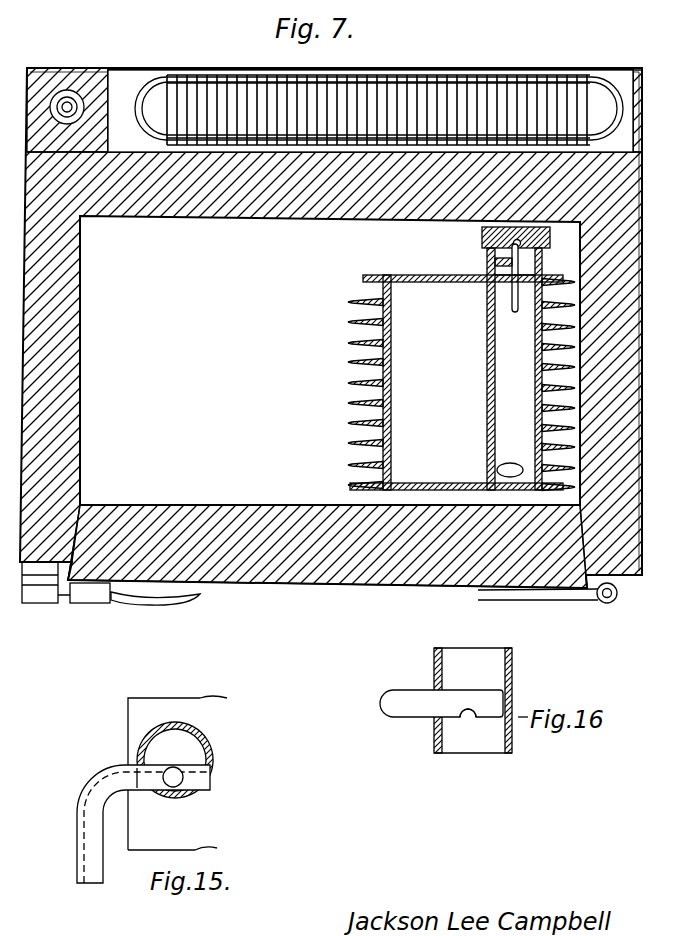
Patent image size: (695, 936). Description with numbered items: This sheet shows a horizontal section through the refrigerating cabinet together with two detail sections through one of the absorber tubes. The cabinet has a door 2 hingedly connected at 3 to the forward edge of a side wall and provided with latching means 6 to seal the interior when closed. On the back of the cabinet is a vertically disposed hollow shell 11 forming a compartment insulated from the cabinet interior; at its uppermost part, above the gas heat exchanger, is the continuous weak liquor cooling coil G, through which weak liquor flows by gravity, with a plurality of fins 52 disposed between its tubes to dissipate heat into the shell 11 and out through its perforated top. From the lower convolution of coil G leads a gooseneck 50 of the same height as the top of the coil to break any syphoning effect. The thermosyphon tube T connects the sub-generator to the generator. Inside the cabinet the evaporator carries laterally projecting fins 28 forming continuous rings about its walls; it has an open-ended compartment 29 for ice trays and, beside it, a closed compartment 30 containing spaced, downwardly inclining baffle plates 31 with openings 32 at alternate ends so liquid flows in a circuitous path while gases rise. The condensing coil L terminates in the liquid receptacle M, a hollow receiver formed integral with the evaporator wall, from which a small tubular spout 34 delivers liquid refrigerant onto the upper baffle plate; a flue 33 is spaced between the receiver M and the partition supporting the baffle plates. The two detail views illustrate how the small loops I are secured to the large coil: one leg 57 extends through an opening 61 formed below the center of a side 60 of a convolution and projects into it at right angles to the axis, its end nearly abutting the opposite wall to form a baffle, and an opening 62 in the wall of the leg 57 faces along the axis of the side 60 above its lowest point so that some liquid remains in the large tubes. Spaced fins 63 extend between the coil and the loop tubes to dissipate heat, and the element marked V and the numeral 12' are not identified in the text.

In FIG. 7, the thermosyphon tube T is at (45, 68).
In FIG. 7, the pivot bolt 12' is at (78, 80).
In FIG. 7, the hollow shell 11 is at (140, 72).
In FIG. 7, the weak liquor cooling coil G is at (447, 72).
In FIG. 7, the fins 52 is at (406, 72).
In FIG. 7, the gooseneck 50 is at (640, 68).
In FIG. 7, the condensing coil L is at (482, 235).
In FIG. 7, the liquid receptacle M is at (482, 248).
In FIG. 7, the flue 33 is at (497, 262).
In FIG. 7, the tubular spout 34 is at (511, 300).
In FIG. 7, the fins 28 is at (352, 322).
In FIG. 7, the open-ended compartment 29 is at (383, 370).
In FIG. 7, the closed compartment 30 is at (495, 362).
In FIG. 7, the baffle plates 31 is at (491, 369).
In FIG. 7, the openings 32 is at (497, 470).
In FIG. 7, the door 2 is at (240, 507).
In FIG. 7, the latching means 6 is at (88, 598).
In FIG. 7, the hinge connection 3 is at (606, 603).
In FIG. 15, the fins 63 is at (164, 704).
In FIG. 15, the side of convolution 60 is at (207, 745).
In FIG. 16, the side of convolution 60 is at (513, 672).
In FIG. 15, the opening V is at (180, 725).
In FIG. 16, the opening V is at (434, 652).
In FIG. 15, the leg 57 is at (77, 813).
In FIG. 16, the leg 57 is at (386, 718).
In FIG. 15, the loops I is at (98, 782).
In FIG. 16, the loops I is at (400, 690).
In FIG. 15, the opening 61 is at (138, 761).
In FIG. 15, the opening 62 is at (175, 777).
In FIG. 16, the opening 62 is at (468, 714).